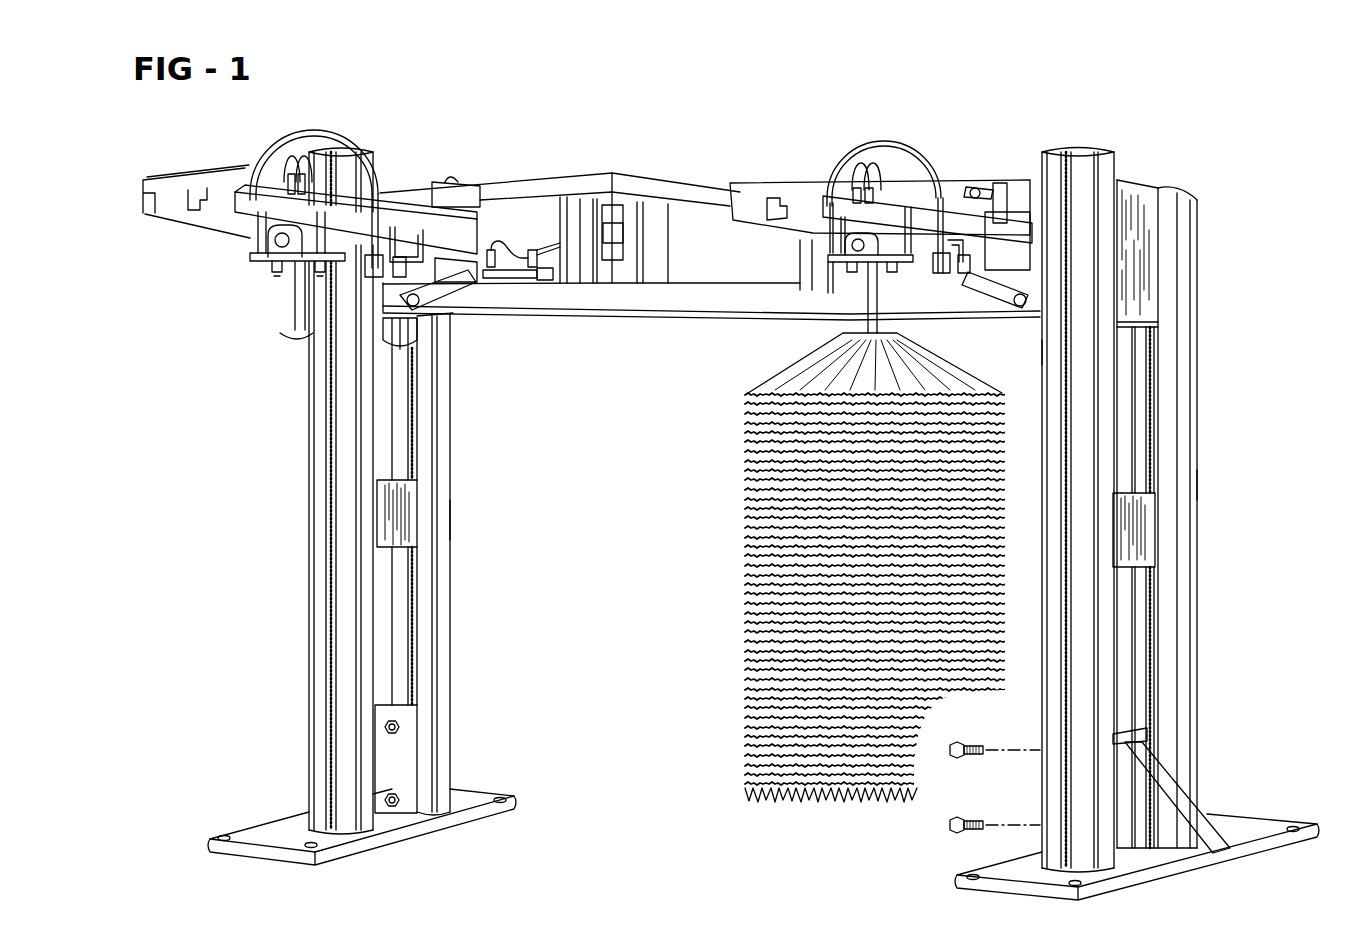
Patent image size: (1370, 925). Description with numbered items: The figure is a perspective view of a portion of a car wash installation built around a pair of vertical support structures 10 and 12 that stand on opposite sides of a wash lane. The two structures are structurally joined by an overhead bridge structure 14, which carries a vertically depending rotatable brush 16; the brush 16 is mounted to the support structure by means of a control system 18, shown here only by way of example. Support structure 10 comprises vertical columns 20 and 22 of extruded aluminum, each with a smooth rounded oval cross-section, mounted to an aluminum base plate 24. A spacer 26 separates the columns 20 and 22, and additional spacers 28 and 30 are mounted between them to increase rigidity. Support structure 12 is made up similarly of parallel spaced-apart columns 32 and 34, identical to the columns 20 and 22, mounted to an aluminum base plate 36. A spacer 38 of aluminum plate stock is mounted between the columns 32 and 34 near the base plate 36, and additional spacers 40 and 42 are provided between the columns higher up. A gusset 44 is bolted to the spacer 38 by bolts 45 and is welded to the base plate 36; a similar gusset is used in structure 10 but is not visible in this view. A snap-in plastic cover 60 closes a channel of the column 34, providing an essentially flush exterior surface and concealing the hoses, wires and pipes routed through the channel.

The vertical support structure 10 is at (460, 516).
The vertical support structure 12 is at (1202, 486).
The overhead bridge structure 14 is at (688, 318).
The rotatable brush 16 is at (745, 415).
The control system 18 is at (922, 186).
The vertical column 20 is at (455, 413).
The vertical column 22 is at (308, 460).
The aluminum base plate 24 is at (498, 790).
The spacer 26 is at (404, 745).
The spacer 28 is at (410, 532).
The spacer 30 is at (423, 343).
The column 32 is at (1197, 637).
The column 34 is at (1040, 700).
The aluminum base plate 36 is at (1278, 815).
The spacer 38 is at (1150, 738).
The spacer 40 is at (1150, 532).
The spacer 42 is at (1145, 268).
The gusset 44 is at (1205, 812).
The bolts 45 is at (971, 818).
The plastic cover 60 is at (1044, 352).